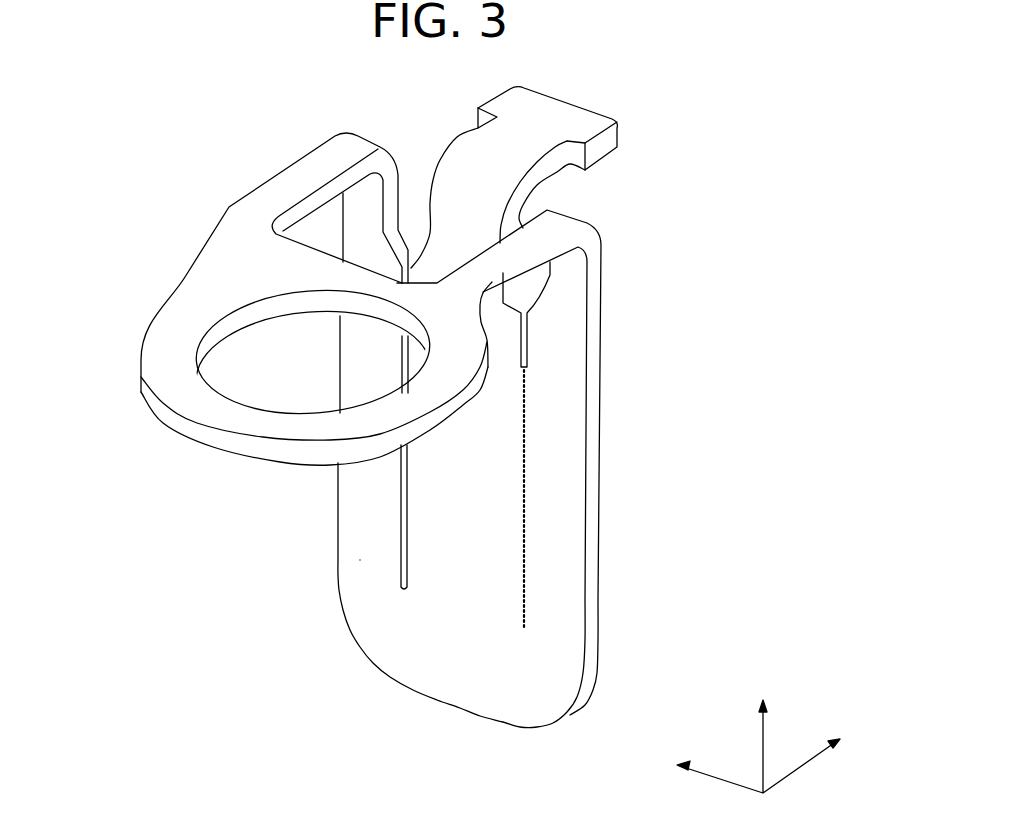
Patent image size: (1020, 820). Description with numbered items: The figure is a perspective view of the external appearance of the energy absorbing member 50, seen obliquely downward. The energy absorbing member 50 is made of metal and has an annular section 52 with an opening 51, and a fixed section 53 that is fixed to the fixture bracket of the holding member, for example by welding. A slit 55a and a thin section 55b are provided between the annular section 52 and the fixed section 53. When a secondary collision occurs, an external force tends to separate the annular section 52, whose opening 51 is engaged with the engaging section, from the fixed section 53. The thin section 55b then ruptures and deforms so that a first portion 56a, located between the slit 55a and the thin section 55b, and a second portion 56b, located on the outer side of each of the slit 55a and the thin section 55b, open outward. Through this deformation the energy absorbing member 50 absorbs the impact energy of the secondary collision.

The energy absorbing member 50 is at (233, 109).
The opening 51 is at (240, 348).
The annular section 52 is at (180, 395).
The fixed section 53 is at (567, 116).
The slit 55a is at (400, 526).
The thin section 55b is at (520, 553).
The first portion 56a is at (483, 512).
The second portion 56b is at (353, 480).